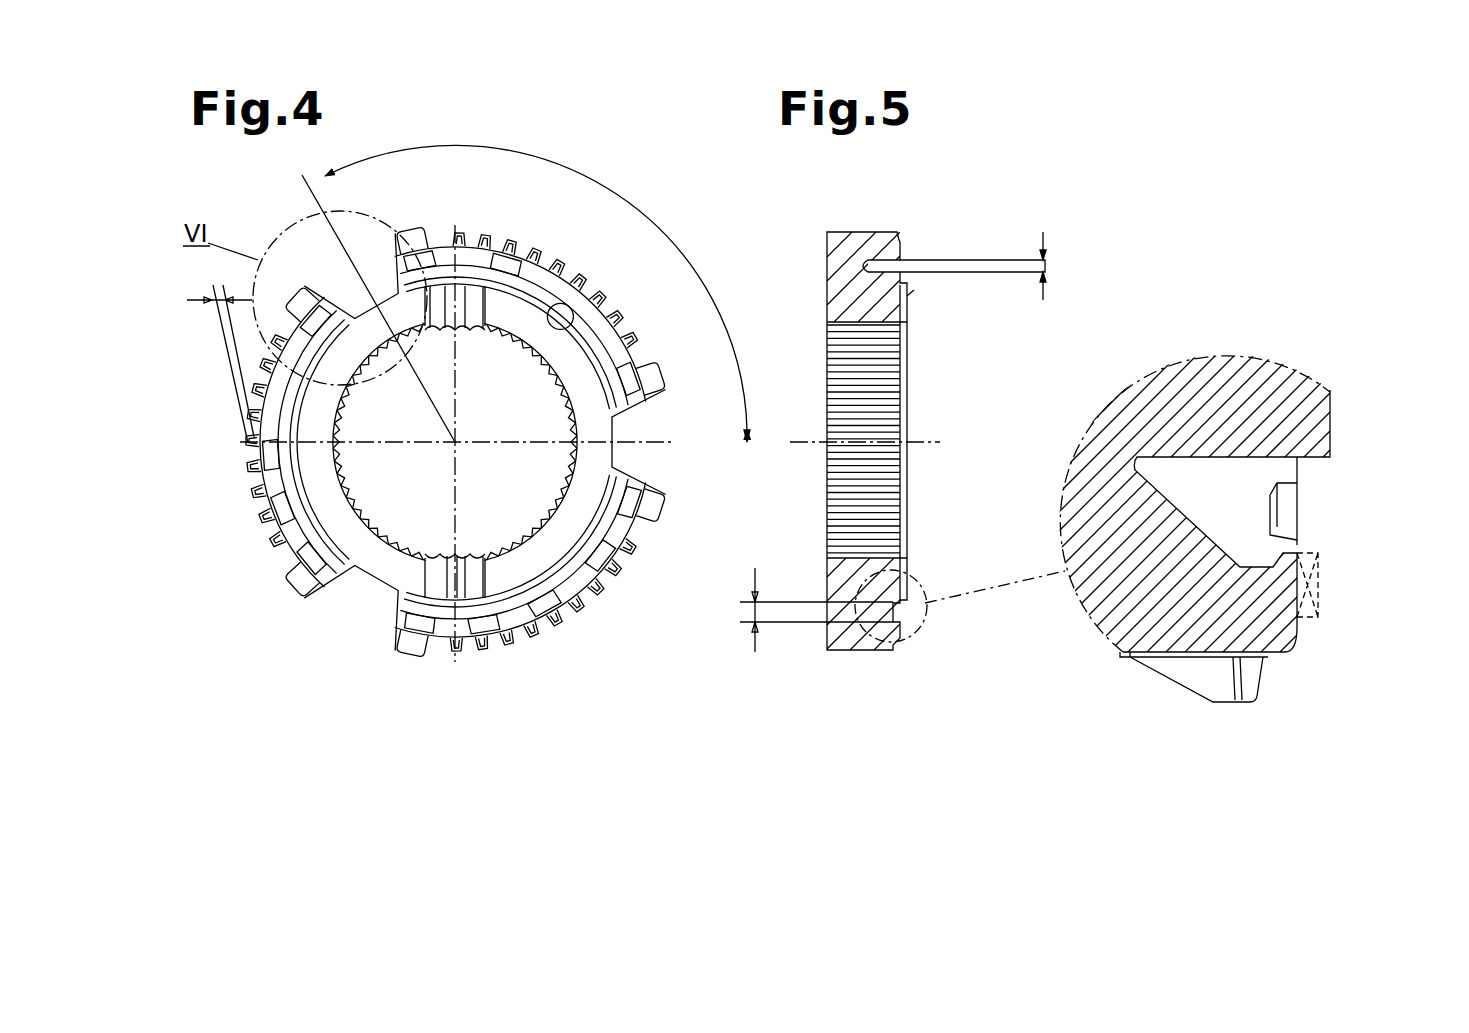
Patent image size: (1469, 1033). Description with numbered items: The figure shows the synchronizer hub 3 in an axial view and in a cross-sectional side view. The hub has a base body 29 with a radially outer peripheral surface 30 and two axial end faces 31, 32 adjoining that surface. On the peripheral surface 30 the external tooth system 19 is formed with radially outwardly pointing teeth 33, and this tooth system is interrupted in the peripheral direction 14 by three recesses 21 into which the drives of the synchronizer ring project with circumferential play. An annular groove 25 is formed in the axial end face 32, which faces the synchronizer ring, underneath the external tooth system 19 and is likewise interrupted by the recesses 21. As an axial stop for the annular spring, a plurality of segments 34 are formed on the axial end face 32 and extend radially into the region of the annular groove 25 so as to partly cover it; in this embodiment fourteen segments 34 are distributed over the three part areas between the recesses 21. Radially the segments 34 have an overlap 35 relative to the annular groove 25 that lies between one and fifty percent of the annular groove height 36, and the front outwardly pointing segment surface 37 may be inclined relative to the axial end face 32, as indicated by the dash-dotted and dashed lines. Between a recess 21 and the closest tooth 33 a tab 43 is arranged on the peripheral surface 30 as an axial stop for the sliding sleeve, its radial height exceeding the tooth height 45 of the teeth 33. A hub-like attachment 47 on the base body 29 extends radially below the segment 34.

In FIG. 4, the synchronizer hub 3 is at (486, 373).
In FIG. 5, the synchronizer hub 3 is at (995, 211).
In FIG. 4, the peripheral direction 14 is at (658, 216).
In FIG. 4, the external tooth system 19 is at (482, 220).
In FIG. 5, the external tooth system 19 is at (872, 229).
In FIG. 4, the recess 21 is at (370, 296).
In FIG. 4, the annular groove 25 is at (490, 247).
In FIG. 5, the annular groove 25 is at (900, 612).
In FIG. 4, the base body 29 is at (542, 558).
In FIG. 4, the peripheral surface 30 is at (272, 328).
In FIG. 5, the axial end face 31 is at (823, 309).
In FIG. 5, the axial end face 32 is at (910, 300).
In FIG. 4, the tooth 33 is at (548, 240).
In FIG. 4, the segment 34 is at (274, 526).
In FIG. 5, the segment 34 is at (904, 265).
In FIG. 5, the overlap 35 is at (1058, 265).
In FIG. 5, the annular groove height 36 is at (749, 609).
In FIG. 5, the segment surface 37 is at (1315, 584).
In FIG. 4, the tab 43 is at (294, 292).
In FIG. 4, the tooth height 45 is at (211, 282).
In FIG. 5, the hub-like attachment 47 is at (913, 546).